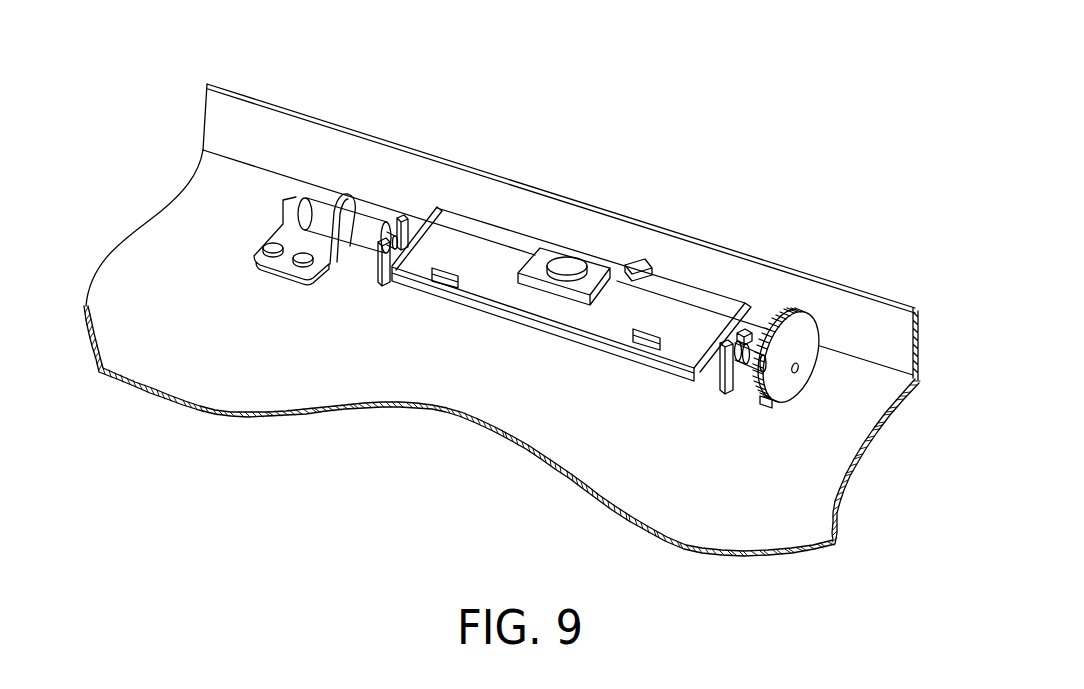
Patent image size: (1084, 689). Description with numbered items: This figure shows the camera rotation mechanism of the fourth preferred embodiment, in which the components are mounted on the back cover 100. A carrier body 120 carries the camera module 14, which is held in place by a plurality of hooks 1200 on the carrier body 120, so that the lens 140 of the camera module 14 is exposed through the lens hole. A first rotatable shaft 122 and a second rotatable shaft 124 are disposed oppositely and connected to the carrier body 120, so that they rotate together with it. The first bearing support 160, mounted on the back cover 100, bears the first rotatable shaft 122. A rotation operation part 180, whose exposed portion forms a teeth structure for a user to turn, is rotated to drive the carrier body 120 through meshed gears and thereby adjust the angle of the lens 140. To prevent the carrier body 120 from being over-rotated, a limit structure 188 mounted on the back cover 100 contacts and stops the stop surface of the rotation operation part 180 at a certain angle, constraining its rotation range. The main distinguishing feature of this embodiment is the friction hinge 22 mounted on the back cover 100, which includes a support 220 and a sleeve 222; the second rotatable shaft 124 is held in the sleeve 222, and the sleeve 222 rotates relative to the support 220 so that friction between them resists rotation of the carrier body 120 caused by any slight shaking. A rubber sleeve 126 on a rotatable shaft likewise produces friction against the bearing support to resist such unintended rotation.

The back cover 100 is at (136, 275).
The friction hinge 22 is at (445, 80).
The support 220 is at (290, 228).
The sleeve 222 is at (368, 224).
The camera module 14 is at (488, 237).
The lens 140 is at (566, 266).
The hooks 1200 is at (648, 267).
The rotation operation part 180 is at (807, 337).
The rubber sleeve 126 is at (377, 268).
The second rotatable shaft 124 is at (403, 268).
The carrier body 120 is at (545, 323).
The first bearing support 160 is at (725, 371).
The first rotatable shaft 122 is at (753, 358).
The limit structure 188 is at (775, 403).